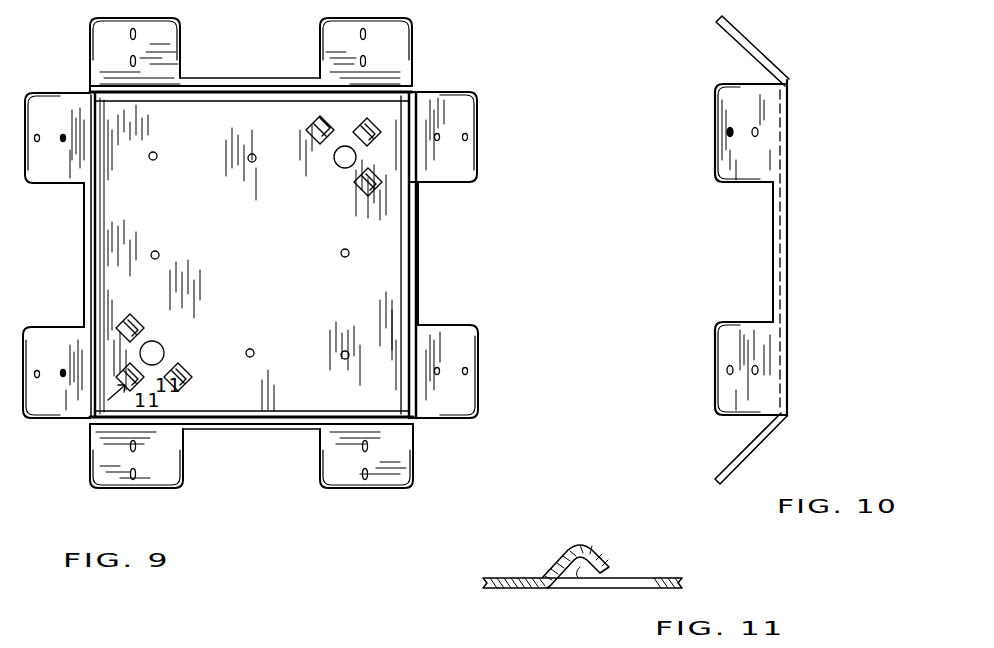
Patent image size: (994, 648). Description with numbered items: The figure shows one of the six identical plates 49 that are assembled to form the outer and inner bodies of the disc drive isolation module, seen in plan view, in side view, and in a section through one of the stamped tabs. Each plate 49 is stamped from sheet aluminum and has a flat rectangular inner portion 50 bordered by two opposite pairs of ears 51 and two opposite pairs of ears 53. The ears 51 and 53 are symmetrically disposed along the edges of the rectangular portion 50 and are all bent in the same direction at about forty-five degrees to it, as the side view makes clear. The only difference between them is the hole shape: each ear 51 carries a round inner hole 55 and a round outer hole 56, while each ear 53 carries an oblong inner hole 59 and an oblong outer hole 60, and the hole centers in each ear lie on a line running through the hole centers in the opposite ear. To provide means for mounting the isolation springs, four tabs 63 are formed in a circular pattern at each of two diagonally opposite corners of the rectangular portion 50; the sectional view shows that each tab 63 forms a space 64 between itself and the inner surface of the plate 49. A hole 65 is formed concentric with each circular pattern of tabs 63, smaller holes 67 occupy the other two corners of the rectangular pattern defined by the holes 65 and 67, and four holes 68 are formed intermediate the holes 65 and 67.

In FIG. 9, the plate 49 is at (414, 75).
In FIG. 10, the plate 49 is at (776, 62).
In FIG. 11, the plate 49 is at (498, 600).
In FIG. 9, the rectangular inner portion 50 is at (388, 243).
In FIG. 10, the rectangular inner portion 50 is at (789, 226).
In FIG. 9, the ears 51 is at (62, 190).
In FIG. 10, the ears 51 is at (738, 183).
In FIG. 9, the ears 53 is at (180, 54).
In FIG. 10, the ears 53 is at (736, 36).
In FIG. 9, the inner hole 55 is at (62, 140).
In FIG. 10, the inner hole 55 is at (760, 132).
In FIG. 9, the outer hole 56 is at (38, 135).
In FIG. 10, the outer hole 56 is at (726, 133).
In FIG. 9, the inner hole 59 is at (130, 60).
In FIG. 9, the outer hole 60 is at (130, 34).
In FIG. 9, the tabs 63 is at (368, 120).
In FIG. 11, the tabs 63 is at (586, 548).
In FIG. 11, the space 64 is at (578, 578).
In FIG. 9, the hole 65 is at (333, 150).
In FIG. 9, the smaller holes 67 is at (153, 152).
In FIG. 9, the holes 68 is at (249, 163).